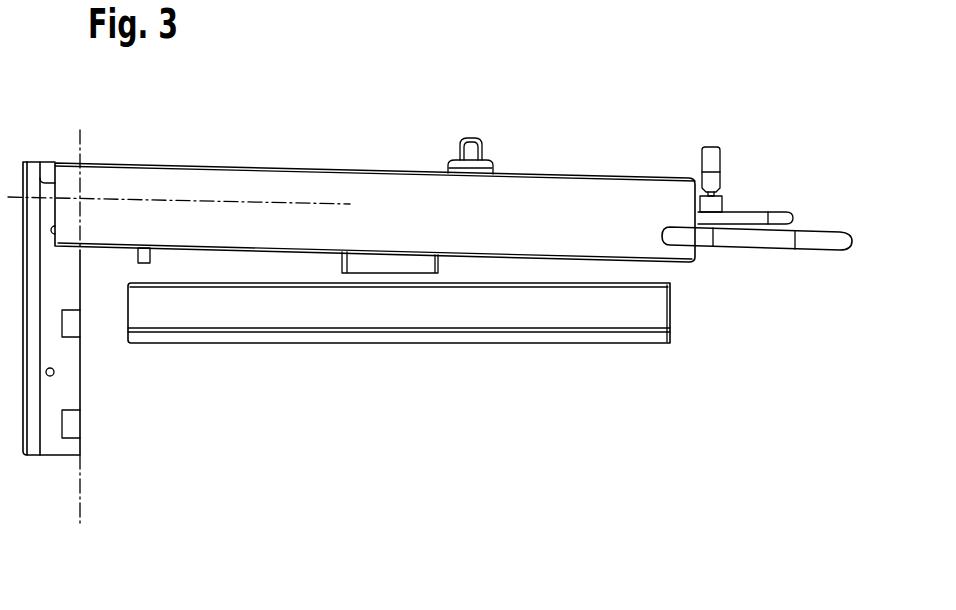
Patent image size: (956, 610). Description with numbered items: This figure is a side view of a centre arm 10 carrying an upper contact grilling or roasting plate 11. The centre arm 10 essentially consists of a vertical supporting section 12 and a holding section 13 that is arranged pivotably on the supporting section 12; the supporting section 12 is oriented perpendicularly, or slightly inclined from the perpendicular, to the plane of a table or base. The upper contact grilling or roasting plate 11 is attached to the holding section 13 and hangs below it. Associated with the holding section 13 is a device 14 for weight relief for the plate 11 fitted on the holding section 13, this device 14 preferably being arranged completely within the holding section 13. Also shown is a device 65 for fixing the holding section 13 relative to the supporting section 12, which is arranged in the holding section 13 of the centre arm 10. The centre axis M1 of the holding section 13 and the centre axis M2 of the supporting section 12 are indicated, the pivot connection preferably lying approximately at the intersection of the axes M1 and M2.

The centre arm 10 is at (273, 112).
The upper contact grilling or roasting plate 11 is at (530, 336).
The vertical supporting section 12 is at (62, 397).
The holding section 13 is at (586, 205).
The device for weight relief 14 is at (727, 166).
The device for fixing the holding section relative to the supporting section 65 is at (772, 204).
The centre axis of the holding section M1 is at (165, 194).
The centre axis of the supporting section M2 is at (82, 508).